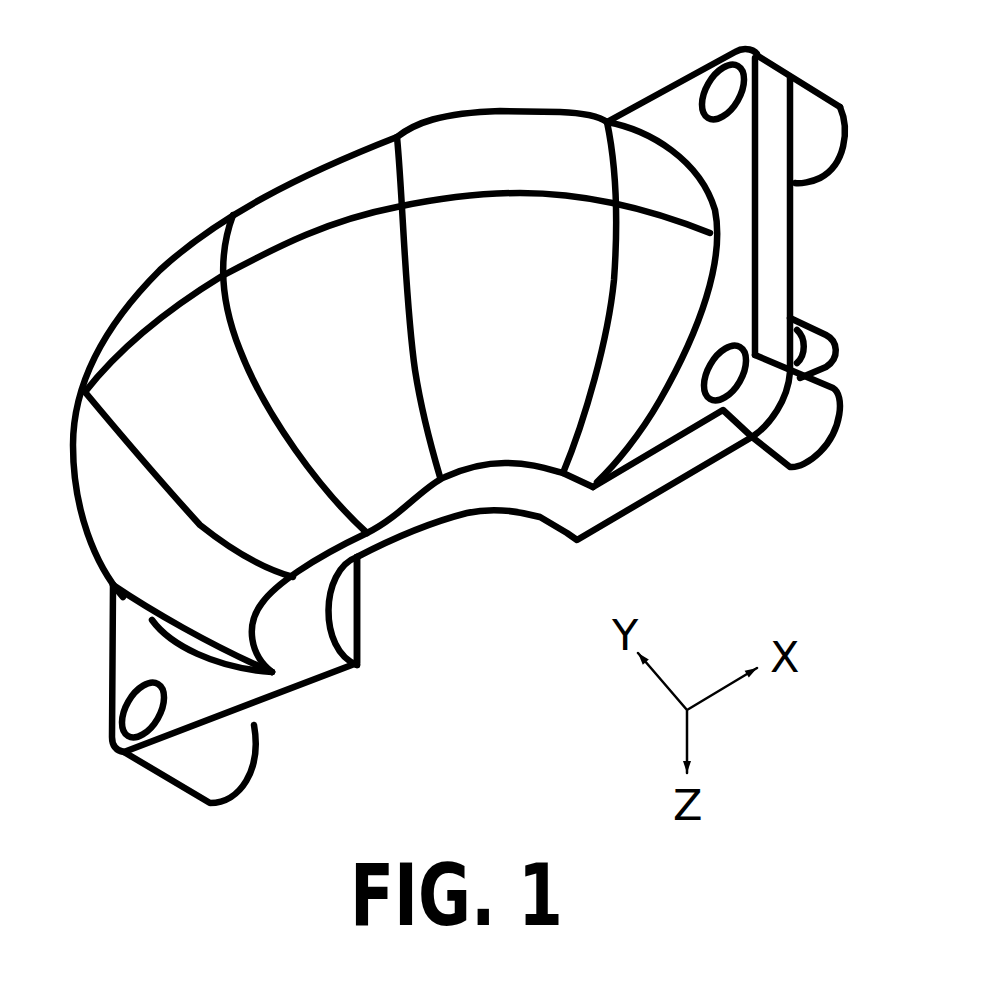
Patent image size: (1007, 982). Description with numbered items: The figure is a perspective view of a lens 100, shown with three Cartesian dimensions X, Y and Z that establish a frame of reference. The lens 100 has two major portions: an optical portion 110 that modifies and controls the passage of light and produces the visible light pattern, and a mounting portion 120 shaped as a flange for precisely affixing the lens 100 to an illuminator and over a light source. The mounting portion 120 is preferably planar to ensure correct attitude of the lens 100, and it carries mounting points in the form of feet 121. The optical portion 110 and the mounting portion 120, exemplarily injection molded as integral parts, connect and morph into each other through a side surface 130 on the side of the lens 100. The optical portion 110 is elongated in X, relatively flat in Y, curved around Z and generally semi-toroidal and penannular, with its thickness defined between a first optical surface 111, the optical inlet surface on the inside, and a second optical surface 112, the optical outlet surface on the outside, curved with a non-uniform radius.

The lens 100 is at (175, 223).
The optical portion 110 is at (328, 203).
The first optical surface 111 is at (342, 602).
The second optical surface 112 is at (477, 113).
The mounting portion 120 is at (667, 110).
The feet 121 is at (785, 442).
The side surface 130 is at (307, 670).